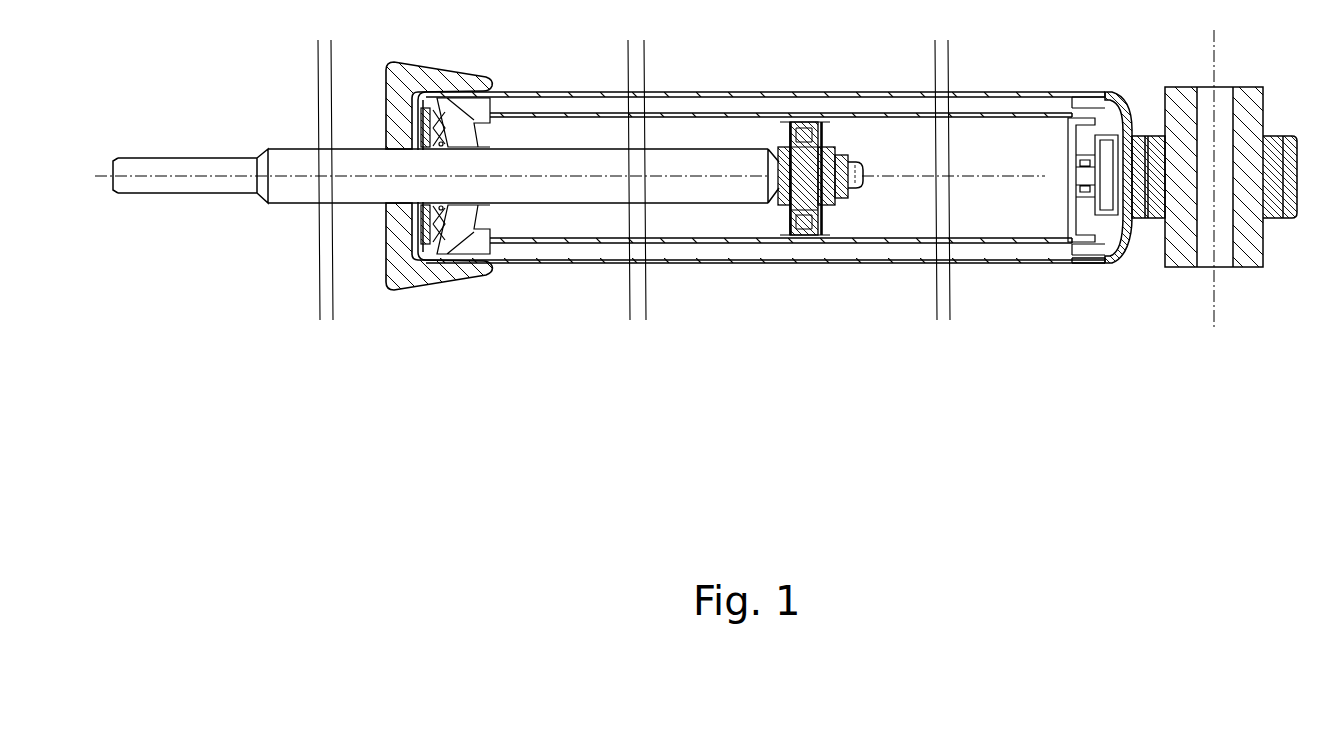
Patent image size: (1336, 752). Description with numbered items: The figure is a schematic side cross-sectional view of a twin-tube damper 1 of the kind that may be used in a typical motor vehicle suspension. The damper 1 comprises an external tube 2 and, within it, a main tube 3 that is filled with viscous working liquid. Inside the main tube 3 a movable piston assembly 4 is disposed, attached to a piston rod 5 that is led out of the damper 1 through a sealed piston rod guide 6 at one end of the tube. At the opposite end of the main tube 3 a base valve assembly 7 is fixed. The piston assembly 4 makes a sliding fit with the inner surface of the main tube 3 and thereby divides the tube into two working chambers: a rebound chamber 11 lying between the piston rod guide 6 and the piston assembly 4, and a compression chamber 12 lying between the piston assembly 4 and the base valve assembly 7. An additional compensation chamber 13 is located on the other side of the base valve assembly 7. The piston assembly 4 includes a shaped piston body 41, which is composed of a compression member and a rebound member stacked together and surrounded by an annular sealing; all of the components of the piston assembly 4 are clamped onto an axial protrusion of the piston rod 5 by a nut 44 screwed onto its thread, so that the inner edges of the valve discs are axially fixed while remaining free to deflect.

The twin-tube damper 1 is at (513, 262).
The external tube 2 is at (708, 264).
The main tube 3 is at (665, 244).
The piston assembly 4 is at (820, 260).
The piston rod 5 is at (287, 194).
The piston rod guide 6 is at (394, 292).
The base valve assembly 7 is at (1103, 187).
The rebound chamber 11 is at (607, 226).
The compression chamber 12 is at (960, 223).
The compensation chamber 13 is at (1018, 254).
The piston body 41 is at (816, 236).
The nut 44 is at (830, 208).